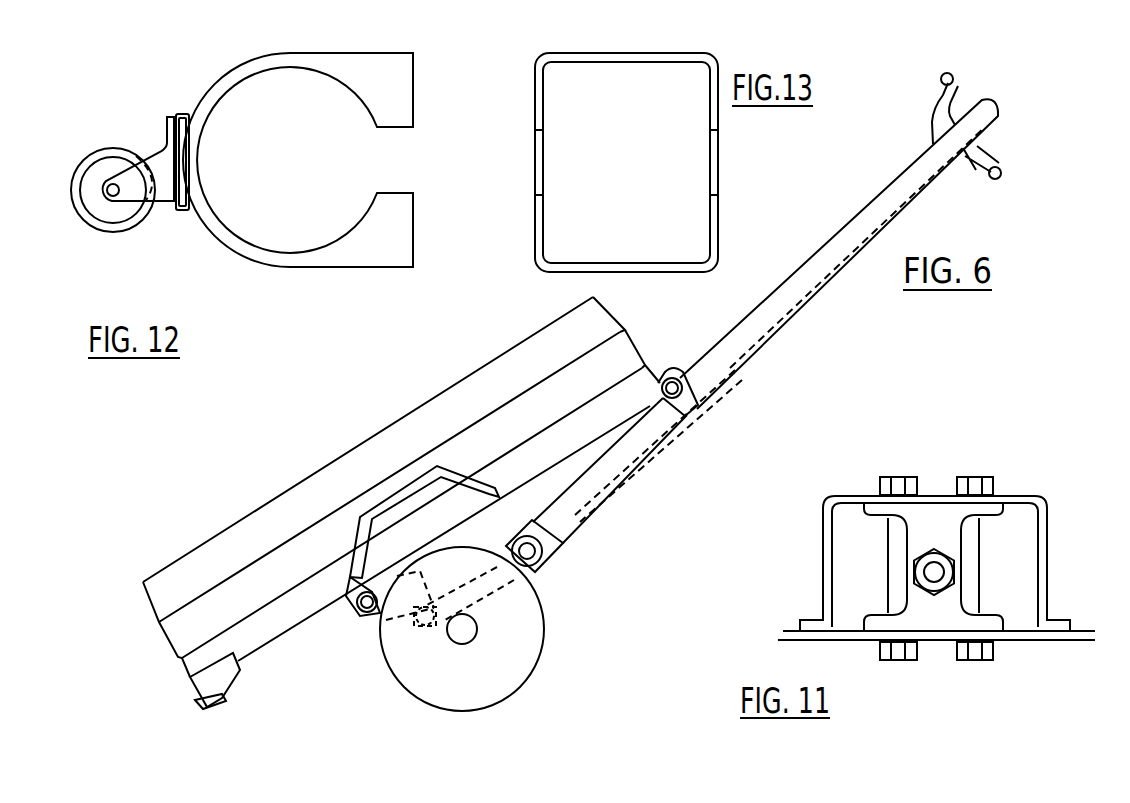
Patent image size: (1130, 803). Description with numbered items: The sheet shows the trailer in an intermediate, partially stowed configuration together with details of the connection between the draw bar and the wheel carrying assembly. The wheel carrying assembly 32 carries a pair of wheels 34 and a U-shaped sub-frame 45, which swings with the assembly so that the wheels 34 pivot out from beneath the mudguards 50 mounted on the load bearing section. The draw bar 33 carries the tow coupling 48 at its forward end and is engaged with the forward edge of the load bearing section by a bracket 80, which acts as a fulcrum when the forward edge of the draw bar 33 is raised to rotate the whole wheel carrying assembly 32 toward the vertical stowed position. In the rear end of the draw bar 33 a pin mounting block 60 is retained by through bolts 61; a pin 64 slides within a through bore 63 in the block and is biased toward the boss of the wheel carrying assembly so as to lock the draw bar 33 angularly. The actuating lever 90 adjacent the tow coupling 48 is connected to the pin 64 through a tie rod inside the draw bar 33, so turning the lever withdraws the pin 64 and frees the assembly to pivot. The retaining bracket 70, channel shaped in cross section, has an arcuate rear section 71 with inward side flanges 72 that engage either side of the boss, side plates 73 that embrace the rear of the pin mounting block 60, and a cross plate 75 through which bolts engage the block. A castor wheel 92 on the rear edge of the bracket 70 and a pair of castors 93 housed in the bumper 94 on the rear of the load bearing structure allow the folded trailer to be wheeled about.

In FIG. 6, the wheel carrying assembly 32 is at (377, 647).
In FIG. 6, the draw bar 33 is at (852, 237).
In FIG. 11, the draw bar 33 is at (1047, 562).
In FIG. 6, the wheels 34 is at (533, 641).
In FIG. 6, the U-shaped sub-frame 45 is at (527, 573).
In FIG. 6, the tow coupling 48 is at (985, 110).
In FIG. 6, the mudguards 50 is at (437, 466).
In FIG. 11, the pin mounting block 60 is at (930, 515).
In FIG. 11, the through bolts 61 is at (975, 485).
In FIG. 11, the through bore 63 is at (913, 583).
In FIG. 11, the pin 64 is at (935, 575).
In FIG. 12, the retaining bracket 70 is at (393, 73).
In FIG. 12, the arcuate rear section 71 is at (198, 80).
In FIG. 12, the inward side flanges 72 is at (212, 228).
In FIG. 12, the side plates 73 is at (385, 227).
In FIG. 13, the cross plate 75 is at (575, 48).
In FIG. 6, the bracket 80 is at (690, 392).
In FIG. 6, the actuating lever 90 is at (982, 178).
In FIG. 12, the castor wheel 92 is at (160, 152).
In FIG. 6, the castors 93 is at (195, 704).
In FIG. 6, the bumper 94 is at (222, 677).